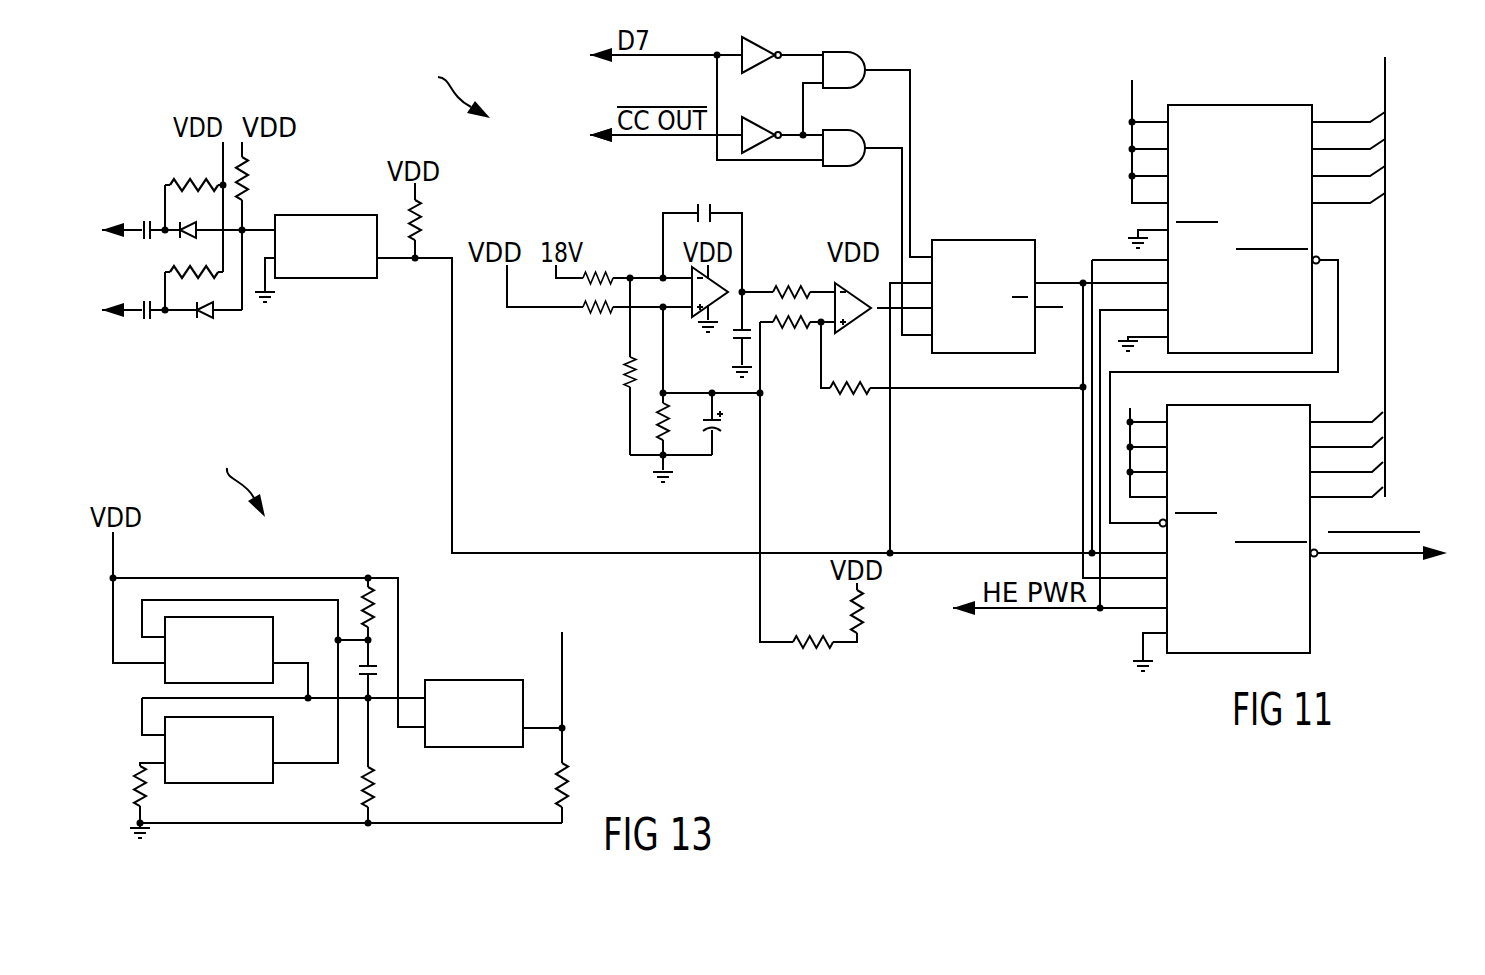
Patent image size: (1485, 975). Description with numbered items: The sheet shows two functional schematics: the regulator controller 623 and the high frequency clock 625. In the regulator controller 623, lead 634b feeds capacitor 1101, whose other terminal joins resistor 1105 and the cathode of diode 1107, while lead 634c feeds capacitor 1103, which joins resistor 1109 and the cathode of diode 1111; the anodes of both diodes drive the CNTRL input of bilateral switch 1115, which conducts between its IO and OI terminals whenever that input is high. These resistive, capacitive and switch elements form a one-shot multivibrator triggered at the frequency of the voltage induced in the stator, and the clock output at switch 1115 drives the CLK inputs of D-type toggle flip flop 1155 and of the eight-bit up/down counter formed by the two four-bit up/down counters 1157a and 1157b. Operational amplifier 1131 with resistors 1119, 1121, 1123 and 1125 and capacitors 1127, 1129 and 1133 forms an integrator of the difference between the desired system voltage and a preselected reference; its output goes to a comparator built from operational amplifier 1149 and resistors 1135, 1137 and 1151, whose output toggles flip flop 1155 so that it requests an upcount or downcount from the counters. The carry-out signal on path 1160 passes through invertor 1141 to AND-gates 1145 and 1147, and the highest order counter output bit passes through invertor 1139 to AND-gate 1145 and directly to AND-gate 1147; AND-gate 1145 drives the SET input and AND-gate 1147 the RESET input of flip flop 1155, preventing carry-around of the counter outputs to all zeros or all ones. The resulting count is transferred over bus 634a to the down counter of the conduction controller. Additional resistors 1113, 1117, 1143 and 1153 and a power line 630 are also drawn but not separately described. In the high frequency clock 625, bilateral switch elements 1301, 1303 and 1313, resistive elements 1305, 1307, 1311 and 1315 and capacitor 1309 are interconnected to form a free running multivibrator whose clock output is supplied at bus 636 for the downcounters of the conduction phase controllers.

In FIG. 11, the regulator controller 623 is at (439, 92).
In FIG. 13, the high frequency clock 625 is at (236, 480).
In FIG. 11, the HE PWR line 630 is at (1028, 610).
In FIG. 11, the bus 634a is at (1387, 60).
In FIG. 11, the lead 634b is at (132, 229).
In FIG. 11, the lead 634c is at (128, 315).
In FIG. 13, the bus 636 is at (565, 658).
In FIG. 11, the capacitor 1101 is at (140, 222).
In FIG. 11, the capacitor 1103 is at (155, 318).
In FIG. 11, the resistor 1105 is at (189, 178).
In FIG. 11, the diode 1107 is at (187, 238).
In FIG. 11, the resistor 1109 is at (170, 265).
In FIG. 11, the diode 1111 is at (215, 318).
In FIG. 11, the resistor 1113 is at (250, 170).
In FIG. 11, the bilateral switch 1115 is at (325, 215).
In FIG. 11, the resistor 1117 is at (420, 212).
In FIG. 11, the resistor 1119 is at (603, 270).
In FIG. 11, the resistor 1121 is at (583, 300).
In FIG. 11, the resistor 1123 is at (622, 370).
In FIG. 11, the resistor 1125 is at (657, 435).
In FIG. 11, the capacitor 1127 is at (717, 433).
In FIG. 11, the capacitor 1129 is at (712, 210).
In FIG. 11, the operational amplifier 1131 is at (690, 275).
In FIG. 11, the capacitor 1133 is at (733, 345).
In FIG. 11, the resistor 1135 is at (807, 247).
In FIG. 11, the resistor 1137 is at (793, 335).
In FIG. 11, the invertor 1139 is at (742, 72).
In FIG. 11, the invertor 1141 is at (740, 137).
In FIG. 11, the resistor 1143 is at (803, 640).
In FIG. 11, the AND-gate 1145 is at (857, 53).
In FIG. 11, the AND-gate 1147 is at (840, 130).
In FIG. 11, the operational amplifier 1149 is at (858, 283).
In FIG. 11, the resistor 1151 is at (852, 396).
In FIG. 11, the resistor 1153 is at (863, 613).
In FIG. 11, the D-type toggle flip flop 1155 is at (987, 238).
In FIG. 11, the four-bit up/down counter 1157a is at (1238, 105).
In FIG. 11, the four-bit up/down counter 1157b is at (1232, 405).
In FIG. 11, the path 1160 is at (640, 137).
In FIG. 13, the bilateral switch element 1301 is at (165, 672).
In FIG. 13, the bilateral switch element 1303 is at (250, 783).
In FIG. 13, the resistive element 1305 is at (137, 785).
In FIG. 13, the resistive element 1307 is at (373, 618).
In FIG. 13, the capacitor 1309 is at (377, 668).
In FIG. 13, the resistive element 1311 is at (372, 775).
In FIG. 13, the bilateral switch element 1313 is at (482, 680).
In FIG. 13, the resistive element 1315 is at (572, 775).